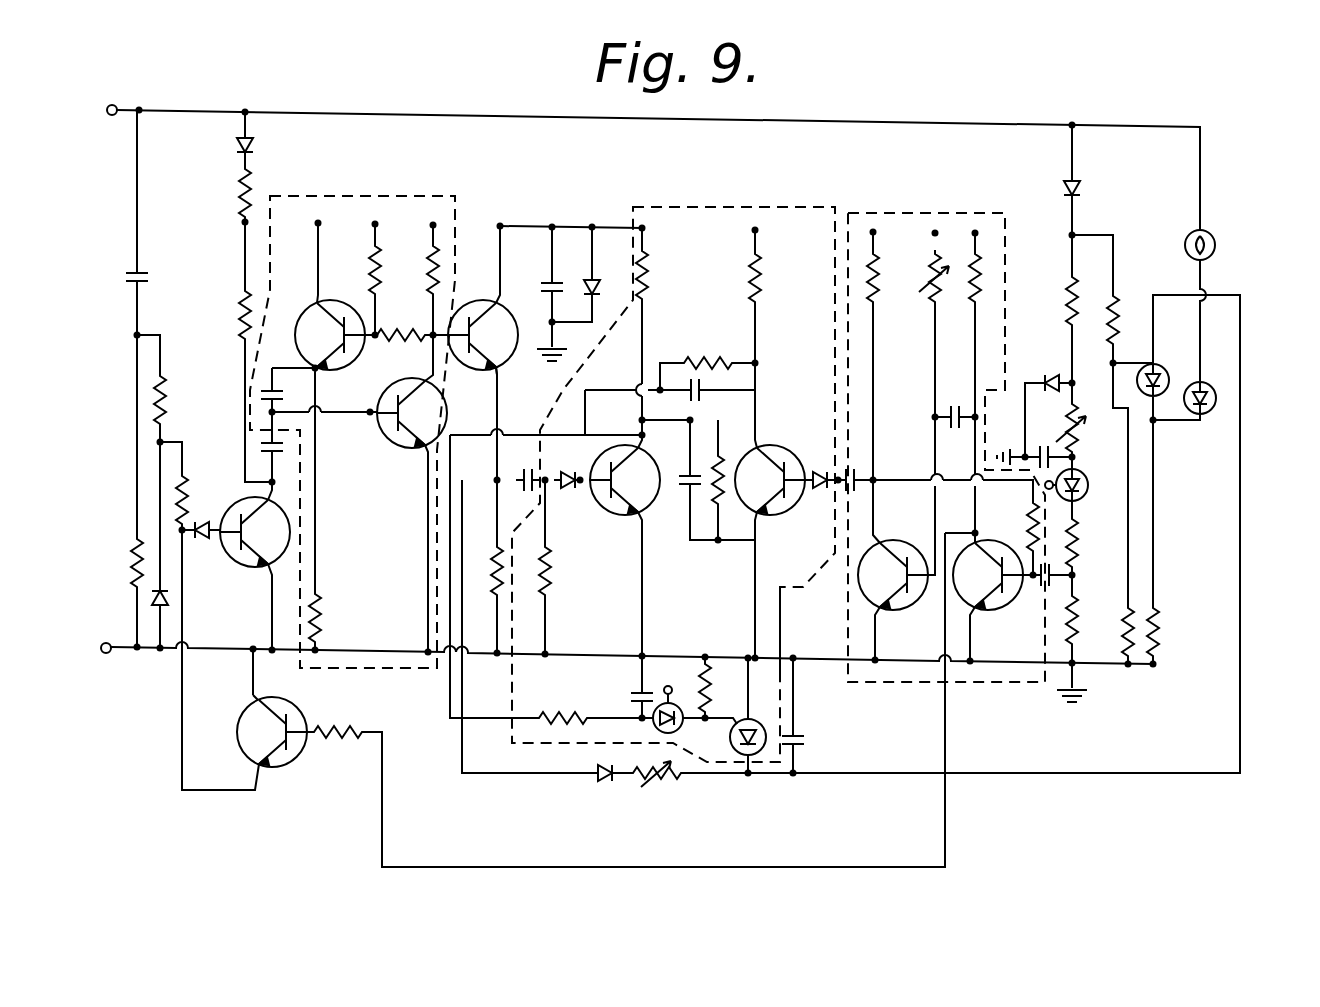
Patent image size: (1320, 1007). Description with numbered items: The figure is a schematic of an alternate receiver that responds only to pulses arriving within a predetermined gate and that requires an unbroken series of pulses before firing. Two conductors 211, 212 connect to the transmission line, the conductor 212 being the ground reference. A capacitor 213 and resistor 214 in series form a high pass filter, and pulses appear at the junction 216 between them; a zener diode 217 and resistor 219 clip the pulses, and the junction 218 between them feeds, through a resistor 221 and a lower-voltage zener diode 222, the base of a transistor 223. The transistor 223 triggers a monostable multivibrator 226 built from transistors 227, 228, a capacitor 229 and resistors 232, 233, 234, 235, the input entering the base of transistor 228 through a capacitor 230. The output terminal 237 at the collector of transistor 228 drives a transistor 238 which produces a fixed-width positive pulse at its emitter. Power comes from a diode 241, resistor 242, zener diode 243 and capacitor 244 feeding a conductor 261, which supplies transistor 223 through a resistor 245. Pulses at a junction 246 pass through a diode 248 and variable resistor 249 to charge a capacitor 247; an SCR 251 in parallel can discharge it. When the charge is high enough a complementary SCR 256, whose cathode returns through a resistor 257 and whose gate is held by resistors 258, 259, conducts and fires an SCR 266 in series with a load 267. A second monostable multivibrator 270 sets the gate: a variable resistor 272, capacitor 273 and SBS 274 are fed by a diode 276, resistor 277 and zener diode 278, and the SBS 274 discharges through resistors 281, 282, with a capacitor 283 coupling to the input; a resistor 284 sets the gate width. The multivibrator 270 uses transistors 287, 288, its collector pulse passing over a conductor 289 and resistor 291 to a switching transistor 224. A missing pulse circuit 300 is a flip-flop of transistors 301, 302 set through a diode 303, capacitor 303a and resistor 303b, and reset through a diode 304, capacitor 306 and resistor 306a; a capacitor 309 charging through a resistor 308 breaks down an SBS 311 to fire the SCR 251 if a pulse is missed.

The conductor 211 is at (122, 106).
The conductor 212 is at (106, 654).
The capacitor 213 is at (125, 276).
The resistor 214 is at (130, 556).
The junction 216 is at (135, 337).
The zener diode 217 is at (172, 598).
The junction 218 is at (165, 440).
The resistor 219 is at (168, 380).
The resistor 221 is at (188, 480).
The zener diode 222 is at (205, 522).
The transistor 223 is at (295, 520).
The switching transistor 224 is at (286, 764).
The monostable multivibrator 226 is at (438, 186).
The transistor 227 is at (338, 300).
The transistor 228 is at (392, 440).
The capacitor 229 is at (280, 392).
The capacitor 230 is at (283, 444).
The resistor 232 is at (428, 276).
The resistor 233 is at (382, 272).
The resistor 234 is at (402, 340).
The resistor 235 is at (324, 618).
The output terminal 237 is at (465, 300).
The transistor 238 is at (502, 364).
The diode 241 is at (256, 148).
The resistor 242 is at (238, 190).
The zener diode 243 is at (598, 282).
The capacitor 244 is at (546, 282).
The resistor 245 is at (238, 305).
The junction 246 is at (495, 478).
The capacitor 247 is at (800, 732).
The diode 248 is at (598, 780).
The variable resistor 249 is at (668, 780).
The SCR 251 is at (758, 752).
The complementary SCR 256 is at (1160, 366).
The resistor 257 is at (1158, 616).
The resistor 258 is at (1118, 292).
The resistor 259 is at (1122, 650).
The conductor 261 is at (612, 222).
The SCR 266 is at (1214, 392).
The load 267 is at (1212, 238).
The monostable multivibrator circuit 270 is at (930, 212).
The variable resistor 272 is at (1080, 436).
The capacitor 273 is at (1040, 450).
The SBS 274 is at (1082, 492).
The diode 276 is at (1082, 188).
The resistor 277 is at (1066, 298).
The zener diode 278 is at (1052, 374).
The resistor 281 is at (1078, 530).
The resistor 282 is at (1078, 622).
The capacitor 283 is at (1040, 586).
The resistor 284 is at (926, 300).
The transistor 287 is at (992, 542).
The transistor 288 is at (893, 542).
The conductor 289 is at (950, 828).
The resistor 291 is at (348, 724).
The missing pulse detector circuit 300 is at (766, 201).
The transistor 301 is at (776, 446).
The transistor 302 is at (620, 516).
The diode 303 is at (818, 470).
The capacitor 303a is at (848, 470).
The resistor 303b is at (815, 596).
The diode 304 is at (570, 490).
The capacitor 306 is at (522, 478).
The resistor 306a is at (552, 578).
The resistor 308 is at (565, 710).
The capacitor 309 is at (636, 686).
The SBS 311 is at (678, 728).